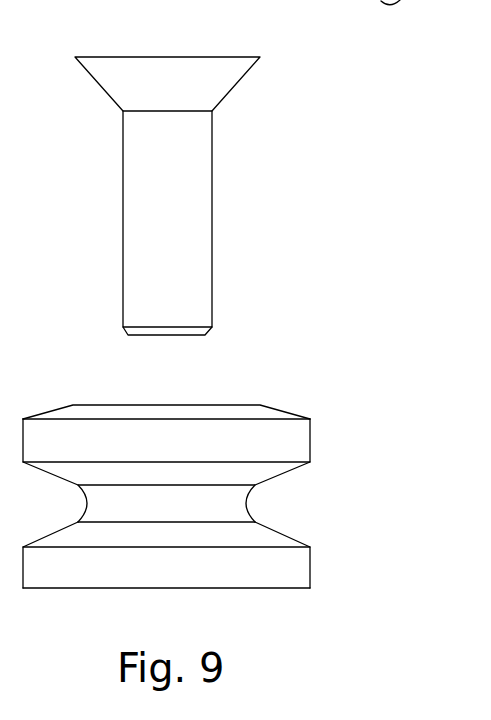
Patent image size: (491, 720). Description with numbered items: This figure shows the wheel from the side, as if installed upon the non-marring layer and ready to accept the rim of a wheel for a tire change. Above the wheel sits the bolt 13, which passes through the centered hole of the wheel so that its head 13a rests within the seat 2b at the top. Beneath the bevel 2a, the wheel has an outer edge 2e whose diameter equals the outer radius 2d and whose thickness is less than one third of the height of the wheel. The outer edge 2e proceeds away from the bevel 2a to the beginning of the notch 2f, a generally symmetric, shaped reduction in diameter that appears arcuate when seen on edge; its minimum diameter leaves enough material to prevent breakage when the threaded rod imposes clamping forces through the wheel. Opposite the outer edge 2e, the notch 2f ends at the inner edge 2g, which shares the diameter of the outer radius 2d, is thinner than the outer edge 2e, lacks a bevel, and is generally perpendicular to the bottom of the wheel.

The bolt 13 is at (212, 180).
The head 13a is at (157, 67).
The bevel 2a is at (287, 412).
The seat 2b is at (225, 407).
The outer radius 2d is at (270, 588).
The outer edge 2e is at (312, 438).
The notch 2f is at (248, 502).
The inner edge 2g is at (312, 568).